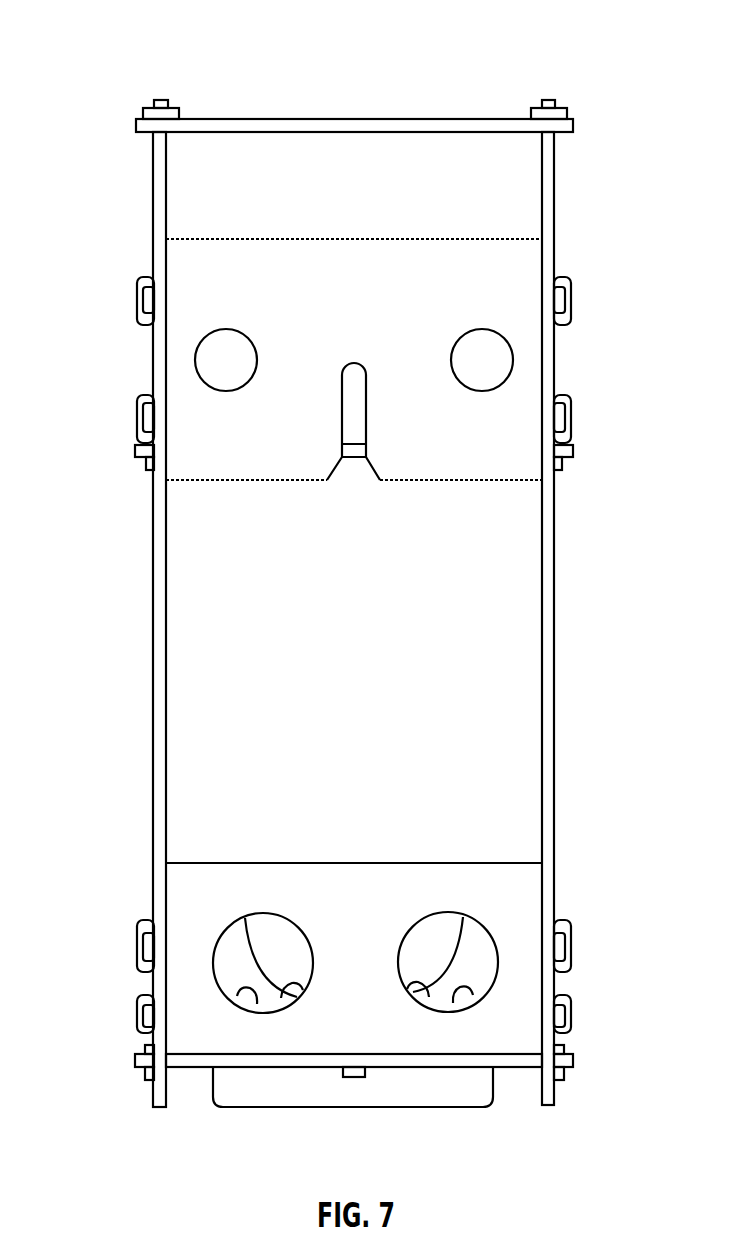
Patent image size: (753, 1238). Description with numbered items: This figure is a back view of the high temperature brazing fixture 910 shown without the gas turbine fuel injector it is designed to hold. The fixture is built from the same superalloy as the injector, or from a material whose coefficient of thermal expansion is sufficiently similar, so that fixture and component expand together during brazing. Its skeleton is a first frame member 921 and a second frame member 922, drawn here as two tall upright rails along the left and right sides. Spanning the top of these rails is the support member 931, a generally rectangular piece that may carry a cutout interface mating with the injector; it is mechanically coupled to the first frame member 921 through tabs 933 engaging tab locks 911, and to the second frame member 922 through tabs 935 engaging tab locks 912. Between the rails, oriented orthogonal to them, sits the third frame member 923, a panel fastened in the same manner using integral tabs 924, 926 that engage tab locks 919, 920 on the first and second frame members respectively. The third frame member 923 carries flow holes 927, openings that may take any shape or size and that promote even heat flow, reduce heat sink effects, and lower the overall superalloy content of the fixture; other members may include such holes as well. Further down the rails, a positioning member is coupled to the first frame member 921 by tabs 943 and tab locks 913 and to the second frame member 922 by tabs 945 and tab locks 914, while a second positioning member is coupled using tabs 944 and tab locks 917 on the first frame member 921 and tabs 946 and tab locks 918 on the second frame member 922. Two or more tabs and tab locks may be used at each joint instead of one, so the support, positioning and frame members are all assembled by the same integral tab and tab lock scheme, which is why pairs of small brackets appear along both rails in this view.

The high temperature brazing fixture 910 is at (148, 36).
The tab lock 911 is at (141, 117).
The tab lock 912 is at (568, 118).
The tab lock 913 is at (148, 1020).
The tab lock 914 is at (562, 1020).
The tab lock 917 is at (147, 463).
The tab lock 918 is at (562, 463).
The tab lock 919 is at (146, 300).
The tab lock 920 is at (563, 300).
The first frame member 921 is at (152, 652).
The second frame member 922 is at (555, 652).
The third frame member 923 is at (515, 268).
The tab 924 is at (138, 285).
The tab 926 is at (572, 285).
The flow hole 927 is at (351, 411).
The support member 931 is at (381, 118).
The tab 933 is at (158, 100).
The tab 935 is at (550, 100).
The tab 943 is at (148, 995).
The tab 944 is at (135, 450).
The tab 945 is at (562, 995).
The tab 946 is at (573, 450).